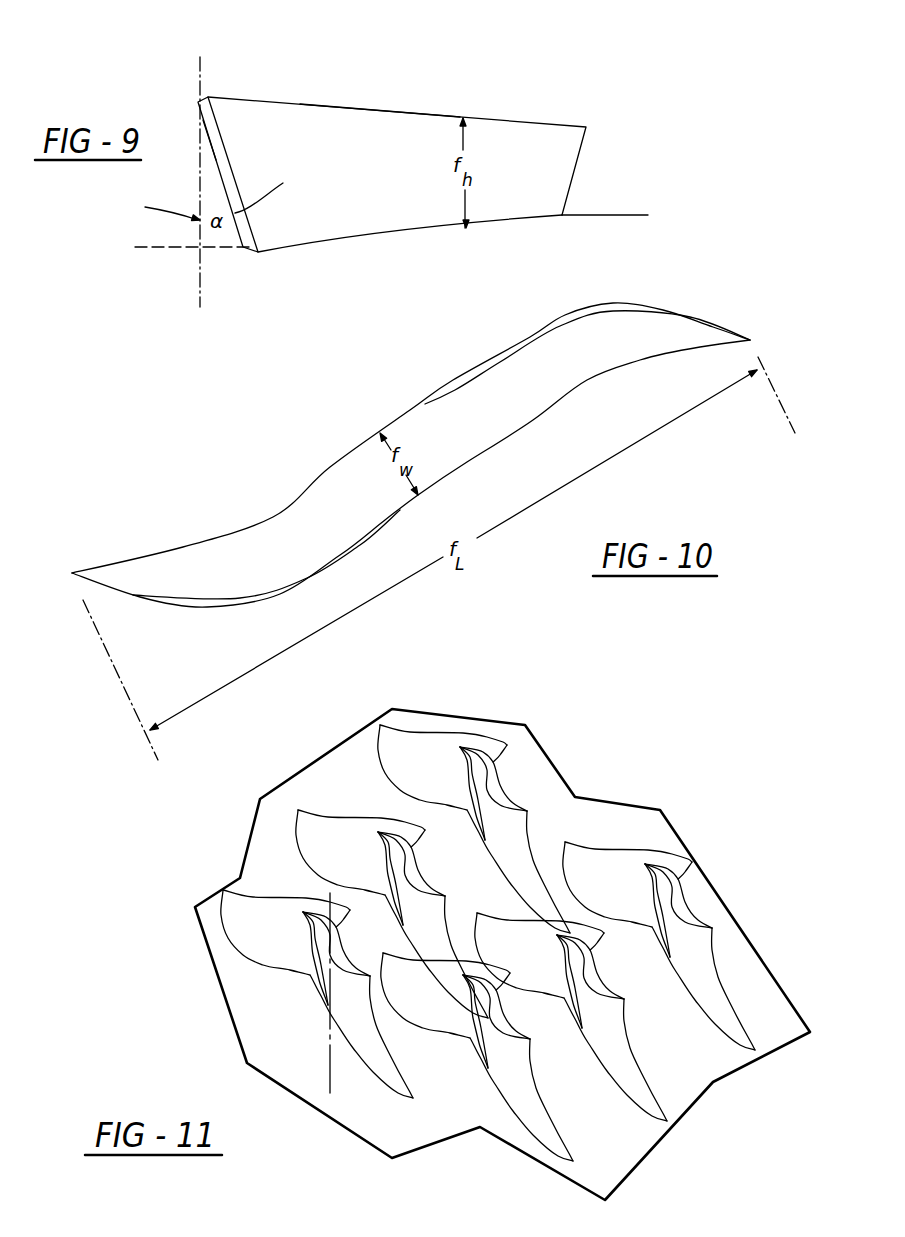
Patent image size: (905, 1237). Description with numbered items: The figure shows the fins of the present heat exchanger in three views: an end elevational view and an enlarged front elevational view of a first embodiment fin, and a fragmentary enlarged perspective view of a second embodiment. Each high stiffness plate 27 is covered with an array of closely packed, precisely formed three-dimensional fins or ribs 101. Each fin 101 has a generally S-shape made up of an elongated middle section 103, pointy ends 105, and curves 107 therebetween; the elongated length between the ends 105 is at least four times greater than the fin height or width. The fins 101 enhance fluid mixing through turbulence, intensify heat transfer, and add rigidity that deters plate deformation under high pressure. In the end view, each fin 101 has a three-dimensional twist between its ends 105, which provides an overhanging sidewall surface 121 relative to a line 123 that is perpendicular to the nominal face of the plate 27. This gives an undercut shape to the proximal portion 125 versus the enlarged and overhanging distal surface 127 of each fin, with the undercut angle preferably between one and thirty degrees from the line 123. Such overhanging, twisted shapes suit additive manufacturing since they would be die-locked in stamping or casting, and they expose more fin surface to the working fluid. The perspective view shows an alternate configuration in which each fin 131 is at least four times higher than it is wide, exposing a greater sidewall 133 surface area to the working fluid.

In FIG. 9, the plate 27 is at (613, 215).
In FIG. 11, the plate 27 is at (525, 753).
In FIG. 9, the fin 101 is at (590, 93).
In FIG. 10, the fin 101 is at (662, 275).
In FIG. 10, the elongated middle section 103 is at (440, 440).
In FIG. 9, the pointy end 105 is at (220, 130).
In FIG. 10, the pointy end 105 is at (72, 573).
In FIG. 10, the curve 107 is at (185, 548).
In FIG. 9, the overhanging sidewall surface 121 is at (213, 167).
In FIG. 9, the line 123 is at (200, 80).
In FIG. 9, the proximal portion 125 is at (296, 246).
In FIG. 9, the distal surface 127 is at (370, 112).
In FIG. 11, the fin 131 is at (503, 831).
In FIG. 11, the sidewall 133 is at (423, 767).